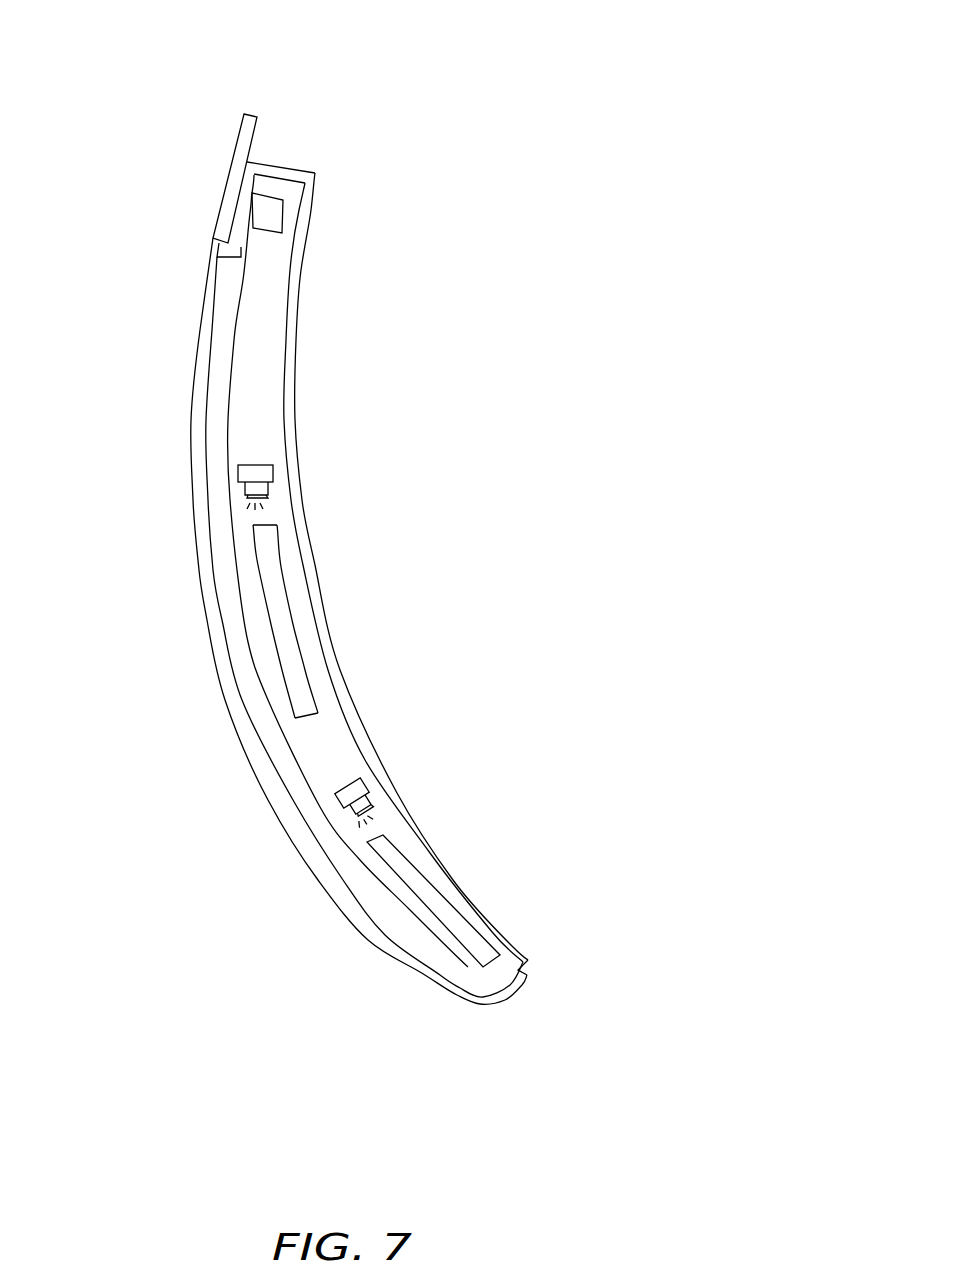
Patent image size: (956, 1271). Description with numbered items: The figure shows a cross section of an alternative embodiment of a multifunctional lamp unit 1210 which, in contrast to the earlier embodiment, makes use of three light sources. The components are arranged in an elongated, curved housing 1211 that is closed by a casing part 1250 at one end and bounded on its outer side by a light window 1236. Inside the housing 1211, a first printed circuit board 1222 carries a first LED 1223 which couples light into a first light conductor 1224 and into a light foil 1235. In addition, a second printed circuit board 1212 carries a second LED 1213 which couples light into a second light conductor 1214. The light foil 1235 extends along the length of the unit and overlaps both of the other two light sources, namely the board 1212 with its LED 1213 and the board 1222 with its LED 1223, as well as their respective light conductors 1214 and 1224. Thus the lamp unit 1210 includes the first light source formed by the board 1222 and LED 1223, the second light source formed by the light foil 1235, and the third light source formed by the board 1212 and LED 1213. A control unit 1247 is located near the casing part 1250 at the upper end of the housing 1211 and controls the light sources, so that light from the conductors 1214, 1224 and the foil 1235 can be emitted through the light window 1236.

The lamp unit 1210 is at (493, 38).
The housing 1211 is at (300, 340).
The printed circuit board 1212 is at (273, 470).
The LED 1213 is at (265, 505).
The light conductor 1214 is at (285, 627).
The printed circuit board 1222 is at (365, 790).
The LED 1223 is at (372, 803).
The light conductor 1224 is at (483, 950).
The light foil 1235 is at (248, 642).
The light window 1236 is at (190, 385).
The control unit 1247 is at (287, 203).
The casing part 1250 is at (238, 133).